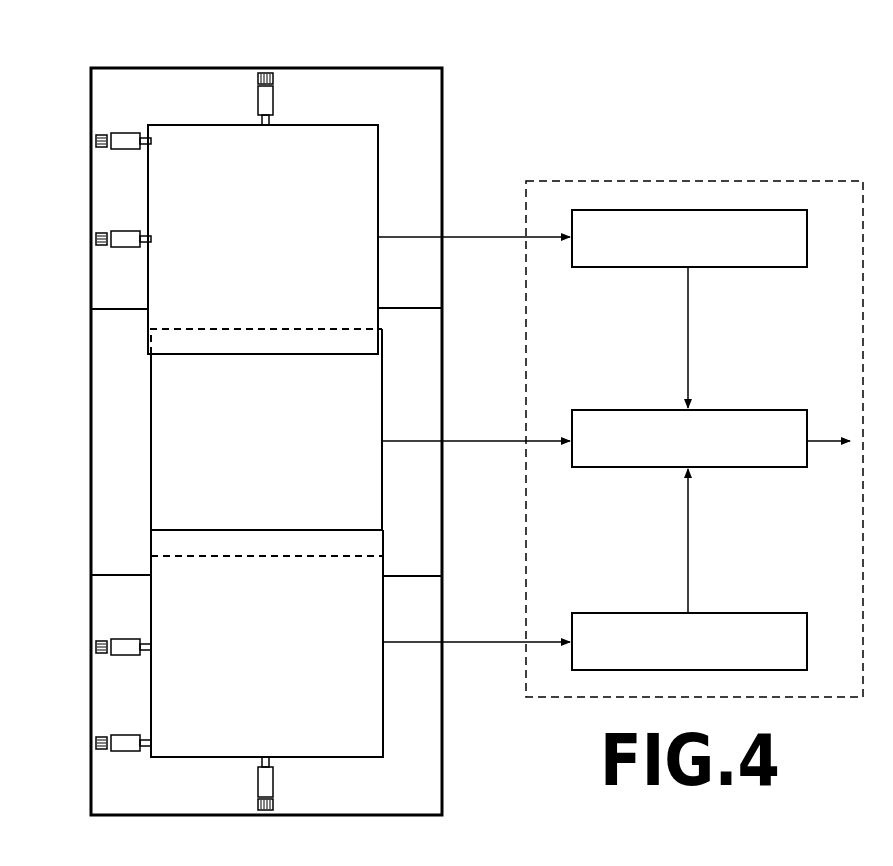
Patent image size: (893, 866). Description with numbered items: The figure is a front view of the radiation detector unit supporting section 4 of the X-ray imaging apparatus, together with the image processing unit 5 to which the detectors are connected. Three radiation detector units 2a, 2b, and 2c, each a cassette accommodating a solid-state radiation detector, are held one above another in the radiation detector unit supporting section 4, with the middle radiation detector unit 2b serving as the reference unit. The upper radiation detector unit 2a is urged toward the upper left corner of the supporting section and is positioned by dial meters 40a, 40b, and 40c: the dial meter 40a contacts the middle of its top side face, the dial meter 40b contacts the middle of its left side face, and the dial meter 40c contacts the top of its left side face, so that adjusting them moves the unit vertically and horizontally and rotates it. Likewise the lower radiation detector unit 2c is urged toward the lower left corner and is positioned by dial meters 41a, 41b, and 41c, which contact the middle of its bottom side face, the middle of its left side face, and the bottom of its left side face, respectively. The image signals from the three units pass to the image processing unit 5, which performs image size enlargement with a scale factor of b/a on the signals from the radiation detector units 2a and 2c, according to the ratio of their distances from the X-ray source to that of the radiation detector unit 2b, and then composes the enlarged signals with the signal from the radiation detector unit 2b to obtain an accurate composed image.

The radiation detector unit supporting section 4 is at (416, 68).
The radiation detector unit 2a is at (148, 178).
The radiation detector unit 2b is at (151, 445).
The radiation detector unit 2c is at (151, 688).
The dial meter 40a is at (271, 100).
The dial meter 40b is at (125, 241).
The dial meter 40c is at (125, 139).
The dial meter 41a is at (270, 783).
The dial meter 41b is at (125, 646).
The dial meter 41c is at (125, 747).
The image processing unit 5 is at (822, 179).